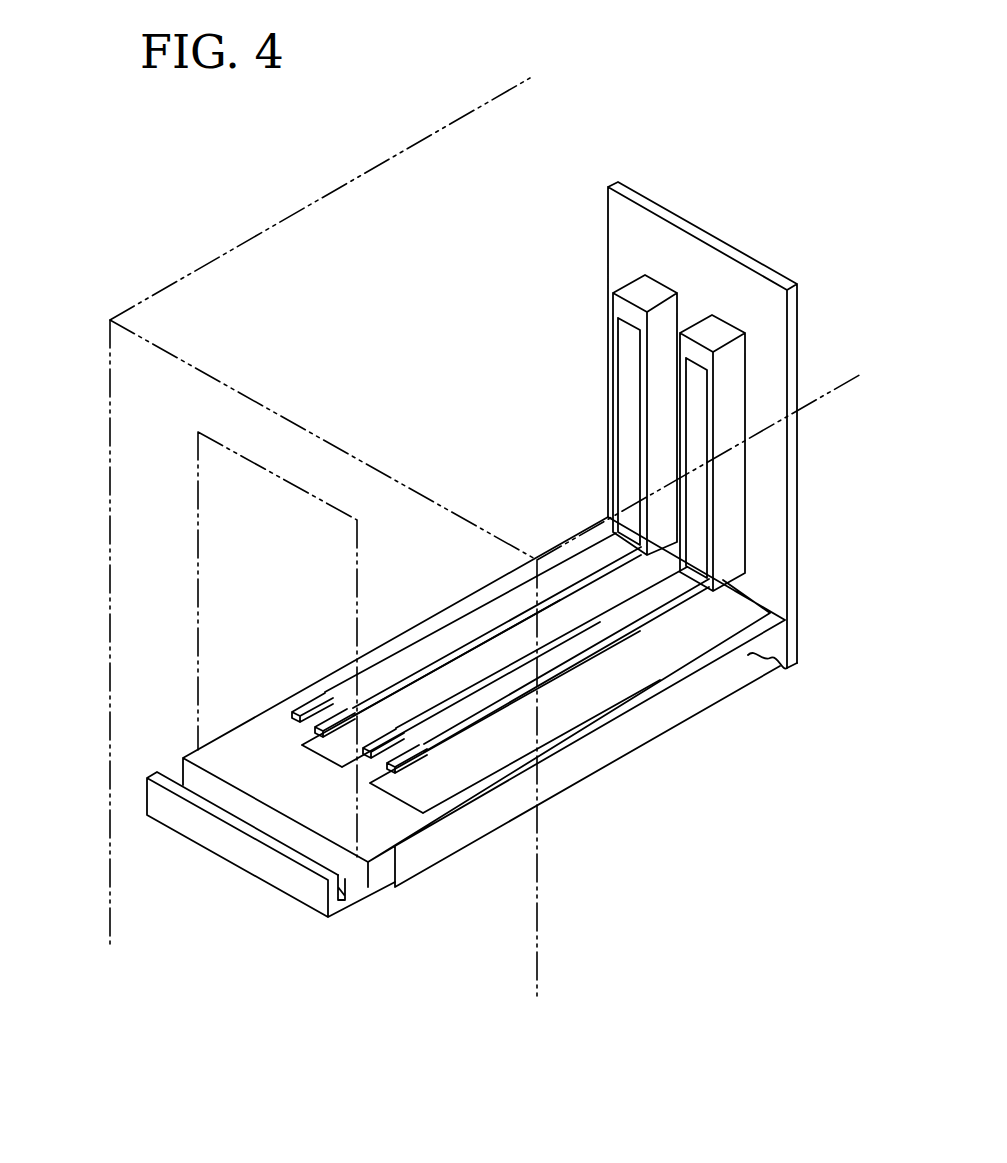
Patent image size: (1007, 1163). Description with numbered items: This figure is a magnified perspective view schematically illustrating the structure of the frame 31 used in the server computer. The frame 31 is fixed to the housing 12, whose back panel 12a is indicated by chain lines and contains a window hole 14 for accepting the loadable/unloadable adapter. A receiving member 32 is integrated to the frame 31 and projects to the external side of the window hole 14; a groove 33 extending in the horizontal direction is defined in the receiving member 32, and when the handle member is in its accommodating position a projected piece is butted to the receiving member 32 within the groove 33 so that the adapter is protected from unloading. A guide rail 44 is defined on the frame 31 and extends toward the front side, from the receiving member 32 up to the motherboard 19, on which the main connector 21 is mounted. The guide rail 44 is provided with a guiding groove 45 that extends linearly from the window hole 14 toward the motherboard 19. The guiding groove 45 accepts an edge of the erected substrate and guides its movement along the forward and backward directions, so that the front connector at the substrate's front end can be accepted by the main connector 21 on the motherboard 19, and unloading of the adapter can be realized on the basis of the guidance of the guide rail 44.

The housing 12 is at (183, 277).
The back panel 12a is at (112, 372).
The window hole 14 is at (198, 595).
The motherboard 19 is at (612, 186).
The main connector 21 is at (645, 292).
The frame 31 is at (650, 709).
The receiving member 32 is at (243, 852).
The groove 33 is at (347, 902).
The guide rail 44 is at (462, 612).
The guiding groove 45 is at (380, 658).